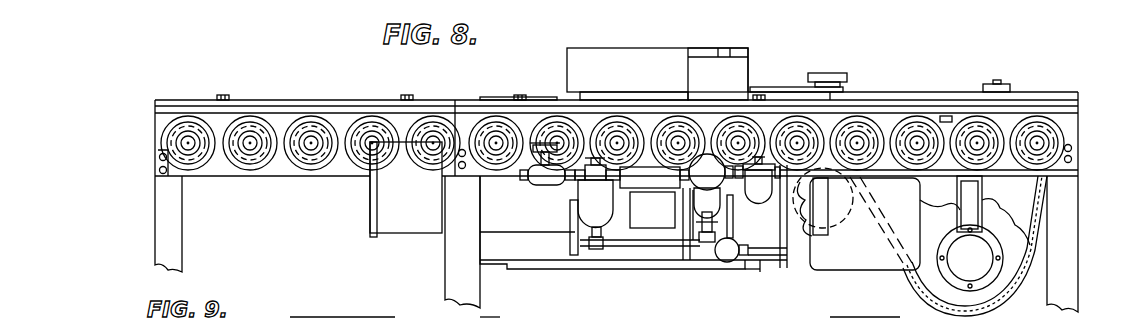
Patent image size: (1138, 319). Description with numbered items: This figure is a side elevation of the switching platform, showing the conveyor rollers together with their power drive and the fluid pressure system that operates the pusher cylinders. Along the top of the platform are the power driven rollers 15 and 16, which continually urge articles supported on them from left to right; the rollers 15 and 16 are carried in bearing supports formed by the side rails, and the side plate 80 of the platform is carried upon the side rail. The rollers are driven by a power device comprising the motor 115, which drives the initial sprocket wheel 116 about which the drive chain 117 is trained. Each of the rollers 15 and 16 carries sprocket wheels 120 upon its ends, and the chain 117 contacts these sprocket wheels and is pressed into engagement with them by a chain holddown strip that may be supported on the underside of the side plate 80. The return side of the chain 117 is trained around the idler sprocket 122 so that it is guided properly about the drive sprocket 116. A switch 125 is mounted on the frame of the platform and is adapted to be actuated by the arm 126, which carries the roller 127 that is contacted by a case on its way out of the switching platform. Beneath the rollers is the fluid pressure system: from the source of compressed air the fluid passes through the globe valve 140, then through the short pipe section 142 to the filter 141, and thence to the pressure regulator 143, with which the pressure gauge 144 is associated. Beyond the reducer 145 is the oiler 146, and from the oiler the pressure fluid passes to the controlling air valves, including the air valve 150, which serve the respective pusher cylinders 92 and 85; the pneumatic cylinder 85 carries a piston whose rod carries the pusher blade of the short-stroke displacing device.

In FIG. 8, the power driven rollers 15 is at (913, 124).
In FIG. 8, the power driven rollers 16 is at (303, 125).
In FIG. 8, the side plate 80 is at (843, 105).
In FIG. 9, the pneumatic cylinder 85 is at (349, 318).
In FIG. 8, the pusher cylinder 92 is at (640, 226).
In FIG. 8, the motor 115 is at (865, 258).
In FIG. 8, the initial sprocket wheel 116 is at (1012, 232).
In FIG. 8, the drive chain 117 is at (951, 112).
In FIG. 8, the sprocket wheels 120 is at (1081, 119).
In FIG. 8, the idler sprocket 122 is at (806, 206).
In FIG. 8, the switch 125 is at (722, 62).
In FIG. 8, the arm 126 is at (761, 91).
In FIG. 8, the roller 127 is at (812, 73).
In FIG. 8, the globe valve 140 is at (541, 178).
In FIG. 8, the filter 141 is at (580, 190).
In FIG. 8, the short pipe section 142 is at (651, 190).
In FIG. 8, the pressure regulator 143 is at (700, 208).
In FIG. 8, the pressure gauge 144 is at (702, 150).
In FIG. 8, the reducer 145 is at (733, 165).
In FIG. 8, the oiler 146 is at (762, 196).
In FIG. 8, the controlling air valve 150 is at (725, 256).